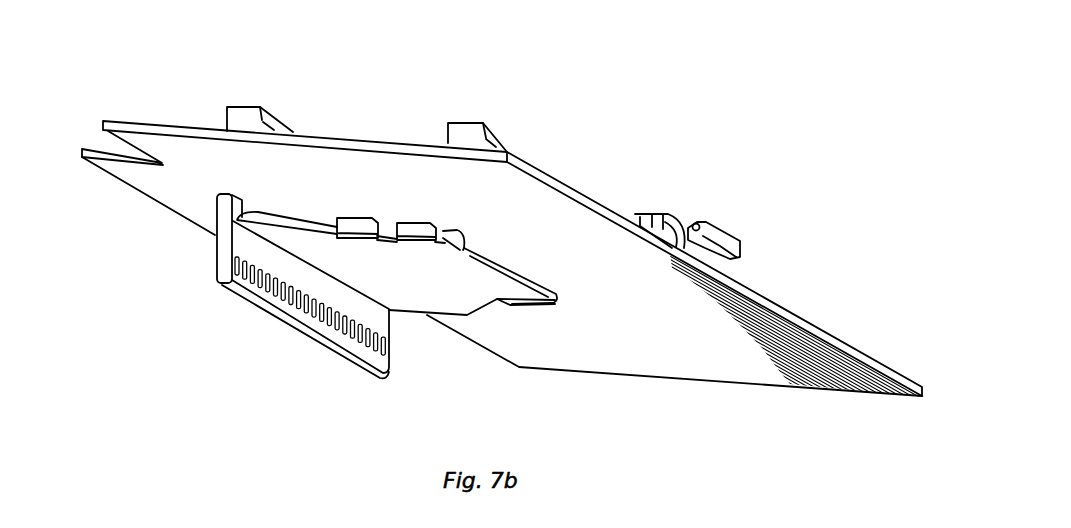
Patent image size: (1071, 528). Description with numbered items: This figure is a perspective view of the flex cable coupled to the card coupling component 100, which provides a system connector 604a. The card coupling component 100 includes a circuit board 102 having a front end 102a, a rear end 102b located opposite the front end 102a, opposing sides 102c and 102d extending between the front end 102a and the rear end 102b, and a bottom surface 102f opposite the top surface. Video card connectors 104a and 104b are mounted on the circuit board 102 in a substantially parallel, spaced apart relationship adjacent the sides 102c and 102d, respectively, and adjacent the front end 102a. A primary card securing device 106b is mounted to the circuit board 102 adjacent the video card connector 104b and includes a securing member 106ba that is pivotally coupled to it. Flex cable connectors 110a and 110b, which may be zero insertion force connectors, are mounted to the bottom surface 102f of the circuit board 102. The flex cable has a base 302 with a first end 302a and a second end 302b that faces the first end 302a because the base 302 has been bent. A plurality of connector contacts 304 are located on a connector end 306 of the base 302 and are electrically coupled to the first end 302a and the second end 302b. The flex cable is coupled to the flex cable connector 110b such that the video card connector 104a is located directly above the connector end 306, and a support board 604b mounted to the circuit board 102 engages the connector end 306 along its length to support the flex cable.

The card coupling component 100 is at (608, 100).
The circuit board 102 is at (486, 283).
The front end 102a is at (365, 146).
The rear end 102b is at (734, 383).
The side 102c is at (115, 178).
The side 102d is at (762, 298).
The bottom surface 102f is at (639, 363).
The video card connector 104a is at (243, 120).
The video card connector 104b is at (465, 135).
The primary card securing device 106b is at (664, 215).
The securing member 106ba is at (733, 237).
The flex cable connector 110a is at (358, 228).
The flex cable connector 110b is at (417, 226).
The base 302 is at (389, 296).
The first end 302a is at (447, 232).
The second end 302b is at (328, 221).
The connector contacts 304 is at (262, 278).
The connector end 306 is at (377, 369).
The system connector 604a is at (334, 296).
The support board 604b is at (218, 210).